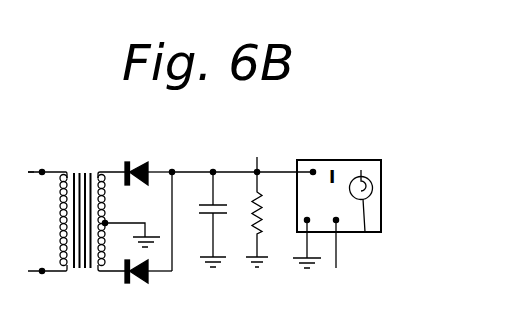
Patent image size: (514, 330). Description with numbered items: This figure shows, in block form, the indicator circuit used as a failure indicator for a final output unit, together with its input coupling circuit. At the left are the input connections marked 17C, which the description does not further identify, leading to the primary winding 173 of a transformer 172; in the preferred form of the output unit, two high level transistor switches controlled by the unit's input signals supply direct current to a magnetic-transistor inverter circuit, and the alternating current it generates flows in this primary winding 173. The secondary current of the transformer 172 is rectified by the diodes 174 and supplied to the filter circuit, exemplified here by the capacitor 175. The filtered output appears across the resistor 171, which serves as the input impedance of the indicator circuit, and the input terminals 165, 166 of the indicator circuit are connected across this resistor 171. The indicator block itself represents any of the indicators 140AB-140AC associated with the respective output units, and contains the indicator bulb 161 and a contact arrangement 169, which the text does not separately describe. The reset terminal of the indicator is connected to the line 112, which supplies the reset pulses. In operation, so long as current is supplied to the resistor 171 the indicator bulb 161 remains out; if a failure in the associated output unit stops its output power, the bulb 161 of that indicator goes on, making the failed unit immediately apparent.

The input terminal (from Fig. 7C) 17C is at (17, 150).
The transformer 172 is at (78, 169).
The primary winding 173 is at (58, 225).
The diodes 174 is at (138, 167).
The capacitor 175 is at (221, 202).
The resistor 171 is at (262, 200).
The indicators 140AB-140AC is at (307, 160).
The input terminal 165 is at (315, 171).
The indicator bulb 161 is at (371, 193).
The input terminal 166 is at (306, 221).
The relay contact 169 is at (335, 219).
The line 112 is at (336, 258).